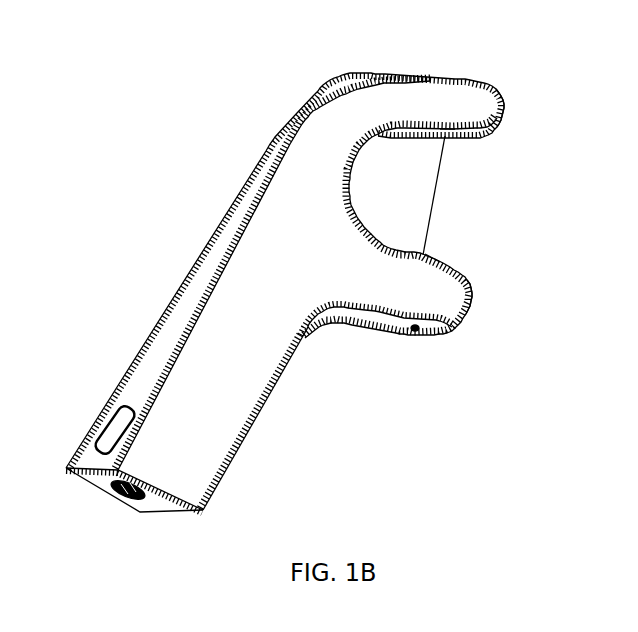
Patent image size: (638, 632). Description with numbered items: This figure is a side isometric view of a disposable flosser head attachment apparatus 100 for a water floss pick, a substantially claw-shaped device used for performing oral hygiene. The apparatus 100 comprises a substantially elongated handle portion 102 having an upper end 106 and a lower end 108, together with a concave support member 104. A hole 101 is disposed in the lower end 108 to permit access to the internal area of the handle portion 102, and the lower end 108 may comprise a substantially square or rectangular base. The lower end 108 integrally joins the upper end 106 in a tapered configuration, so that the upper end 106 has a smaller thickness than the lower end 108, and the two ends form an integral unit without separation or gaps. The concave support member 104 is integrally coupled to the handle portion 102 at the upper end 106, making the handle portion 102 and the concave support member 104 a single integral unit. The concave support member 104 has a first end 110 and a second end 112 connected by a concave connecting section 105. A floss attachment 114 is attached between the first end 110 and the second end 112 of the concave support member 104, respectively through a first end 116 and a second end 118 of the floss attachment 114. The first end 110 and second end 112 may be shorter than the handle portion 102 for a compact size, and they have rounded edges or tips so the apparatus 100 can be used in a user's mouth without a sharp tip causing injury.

The disposable flosser head attachment apparatus 100 is at (138, 133).
The hole 101 is at (120, 493).
The handle portion 102 is at (123, 372).
The concave support member 104 is at (465, 68).
The concave connecting section 105 is at (360, 173).
The upper end 106 is at (303, 335).
The lower end 108 is at (208, 472).
The first end 110 is at (490, 112).
The second end 112 is at (460, 295).
The floss attachment 114 is at (433, 218).
The first end of floss attachment 116 is at (447, 142).
The second end of floss attachment 118 is at (433, 253).